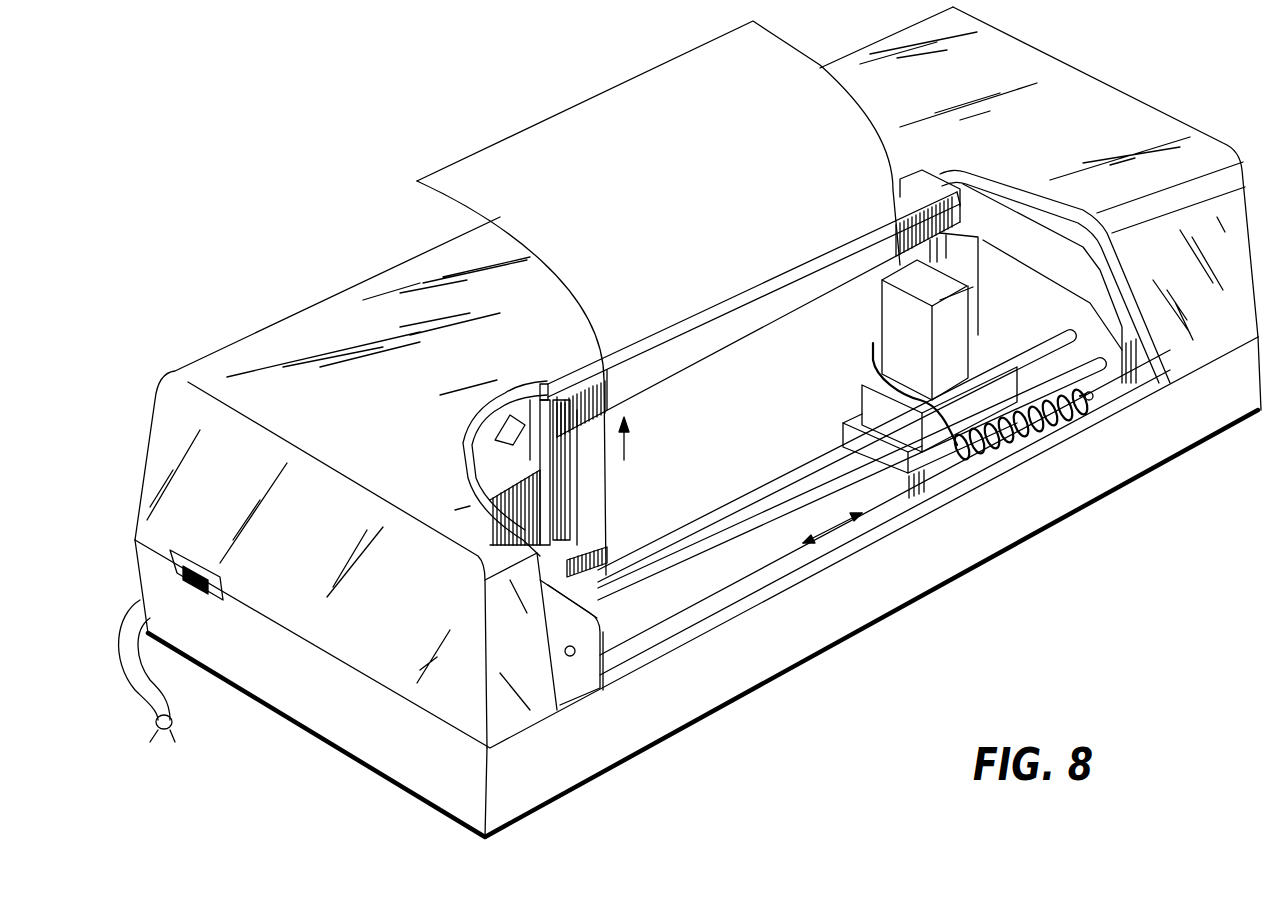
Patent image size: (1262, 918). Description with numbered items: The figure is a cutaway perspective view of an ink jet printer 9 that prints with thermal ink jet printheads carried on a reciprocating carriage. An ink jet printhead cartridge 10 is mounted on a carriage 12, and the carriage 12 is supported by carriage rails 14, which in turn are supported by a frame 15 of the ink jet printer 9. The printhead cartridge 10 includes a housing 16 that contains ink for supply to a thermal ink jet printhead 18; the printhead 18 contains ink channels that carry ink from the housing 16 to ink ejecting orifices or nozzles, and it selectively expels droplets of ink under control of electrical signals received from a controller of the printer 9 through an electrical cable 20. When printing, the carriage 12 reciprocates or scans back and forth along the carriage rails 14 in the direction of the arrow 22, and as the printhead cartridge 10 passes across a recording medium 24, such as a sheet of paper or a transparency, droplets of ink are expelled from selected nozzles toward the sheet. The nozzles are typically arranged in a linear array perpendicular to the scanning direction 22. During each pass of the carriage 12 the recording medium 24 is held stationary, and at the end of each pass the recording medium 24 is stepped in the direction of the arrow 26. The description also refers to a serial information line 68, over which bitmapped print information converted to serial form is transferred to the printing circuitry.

The ink jet printer 9 is at (1112, 52).
The ink jet printhead cartridge 10 is at (887, 250).
The carriage 12 is at (937, 480).
The carriage rails 14 is at (785, 540).
The frame 15 is at (1040, 313).
The housing 16 is at (1057, 433).
The thermal ink jet printhead 18 is at (873, 350).
The electrical cable 20 is at (983, 473).
The arrow 22 is at (845, 545).
The recording medium 24 is at (507, 163).
The arrow 26 is at (630, 443).
The serial information line 68 is at (1112, 413).